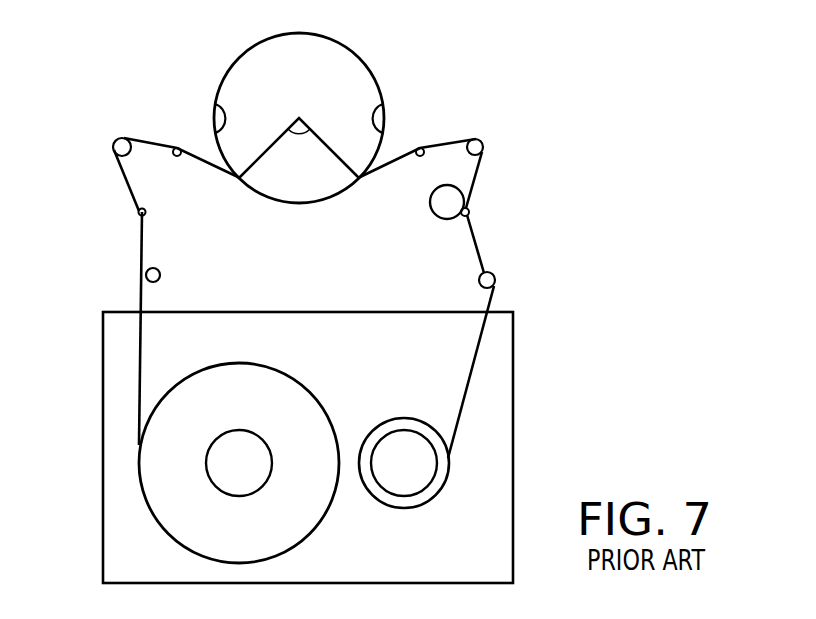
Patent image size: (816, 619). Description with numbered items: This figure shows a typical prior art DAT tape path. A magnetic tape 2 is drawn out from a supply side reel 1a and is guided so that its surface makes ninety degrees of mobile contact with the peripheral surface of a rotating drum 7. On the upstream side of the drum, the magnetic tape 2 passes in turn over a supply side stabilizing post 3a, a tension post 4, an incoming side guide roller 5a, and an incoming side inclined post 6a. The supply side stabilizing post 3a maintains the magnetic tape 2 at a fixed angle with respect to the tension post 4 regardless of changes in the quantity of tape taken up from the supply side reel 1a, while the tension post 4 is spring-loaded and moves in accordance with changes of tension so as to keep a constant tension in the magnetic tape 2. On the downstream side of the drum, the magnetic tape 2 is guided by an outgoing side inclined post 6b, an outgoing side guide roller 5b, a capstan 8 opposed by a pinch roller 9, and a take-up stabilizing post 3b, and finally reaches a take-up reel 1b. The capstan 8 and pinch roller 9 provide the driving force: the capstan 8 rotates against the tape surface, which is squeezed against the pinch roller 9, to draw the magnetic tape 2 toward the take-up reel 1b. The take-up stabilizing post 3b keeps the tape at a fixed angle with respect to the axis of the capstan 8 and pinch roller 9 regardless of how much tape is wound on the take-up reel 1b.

The supply side reel 1a is at (186, 545).
The take-up reel 1b is at (404, 495).
The magnetic tape 2 is at (140, 375).
The supply side stabilizing post 3a is at (146, 275).
The take-up stabilizing post 3b is at (494, 278).
The tension post 4 is at (138, 212).
The incoming side guide roller 5a is at (116, 142).
The outgoing side guide roller 5b is at (482, 142).
The incoming side inclined post 6a is at (177, 148).
The outgoing side inclined post 6b is at (421, 148).
The rotating drum 7 is at (322, 40).
The capstan 8 is at (468, 213).
The pinch roller 9 is at (458, 194).